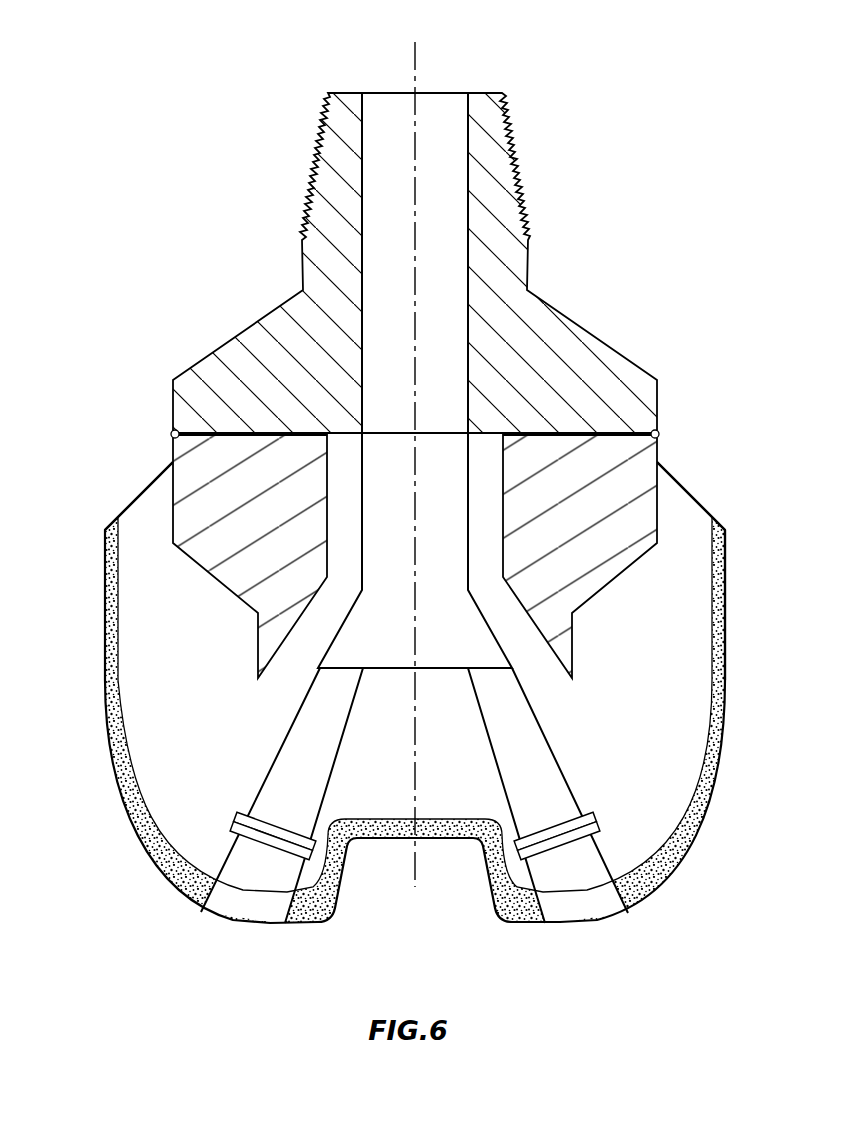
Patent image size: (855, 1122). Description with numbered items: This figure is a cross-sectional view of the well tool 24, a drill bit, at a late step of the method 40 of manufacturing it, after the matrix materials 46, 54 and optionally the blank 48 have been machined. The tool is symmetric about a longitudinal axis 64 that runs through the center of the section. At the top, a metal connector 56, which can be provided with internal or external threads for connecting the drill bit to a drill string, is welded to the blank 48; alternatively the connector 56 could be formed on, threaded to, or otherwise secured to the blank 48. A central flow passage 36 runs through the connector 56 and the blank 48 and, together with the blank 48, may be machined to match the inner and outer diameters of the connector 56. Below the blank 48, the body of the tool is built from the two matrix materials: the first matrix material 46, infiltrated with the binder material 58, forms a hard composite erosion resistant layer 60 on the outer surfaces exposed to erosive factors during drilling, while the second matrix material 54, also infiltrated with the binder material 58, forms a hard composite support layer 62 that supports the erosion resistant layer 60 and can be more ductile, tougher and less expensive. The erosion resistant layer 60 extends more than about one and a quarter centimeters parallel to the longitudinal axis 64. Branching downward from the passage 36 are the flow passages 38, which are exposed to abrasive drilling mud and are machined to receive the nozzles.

The method 40 is at (408, 469).
The longitudinal axis 64 is at (415, 68).
The flow passage 36 is at (424, 311).
The metal connector 56 is at (243, 331).
The well tool 24 is at (158, 449).
The blank 48 is at (658, 450).
The matrix material 54 is at (690, 490).
The matrix material 46 is at (722, 527).
The support layer 62 is at (112, 690).
The binder material 58 is at (137, 746).
The erosion resistant layer 60 is at (112, 778).
The flow passage 38 is at (282, 799).